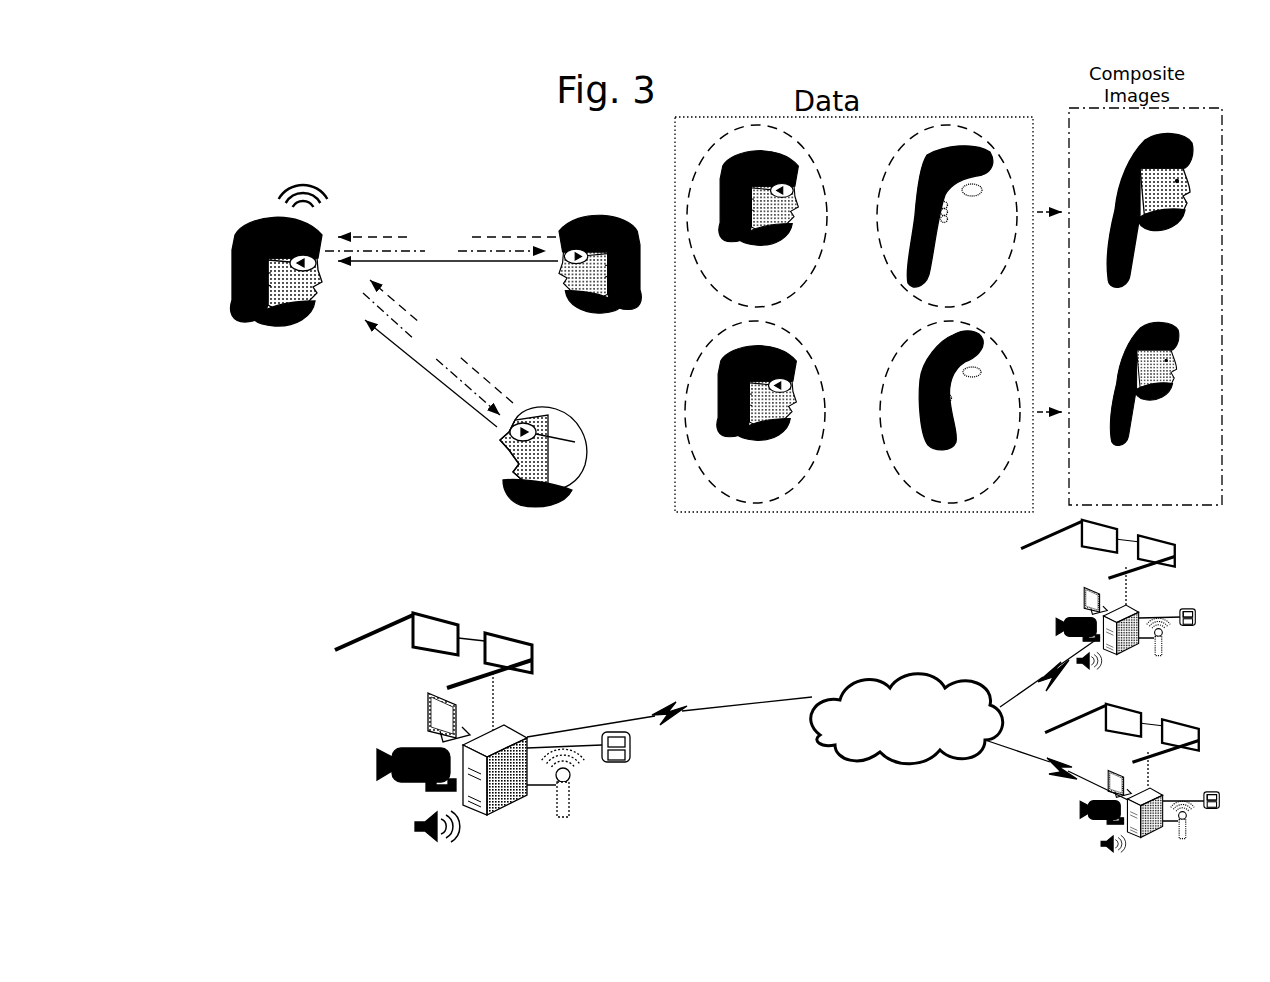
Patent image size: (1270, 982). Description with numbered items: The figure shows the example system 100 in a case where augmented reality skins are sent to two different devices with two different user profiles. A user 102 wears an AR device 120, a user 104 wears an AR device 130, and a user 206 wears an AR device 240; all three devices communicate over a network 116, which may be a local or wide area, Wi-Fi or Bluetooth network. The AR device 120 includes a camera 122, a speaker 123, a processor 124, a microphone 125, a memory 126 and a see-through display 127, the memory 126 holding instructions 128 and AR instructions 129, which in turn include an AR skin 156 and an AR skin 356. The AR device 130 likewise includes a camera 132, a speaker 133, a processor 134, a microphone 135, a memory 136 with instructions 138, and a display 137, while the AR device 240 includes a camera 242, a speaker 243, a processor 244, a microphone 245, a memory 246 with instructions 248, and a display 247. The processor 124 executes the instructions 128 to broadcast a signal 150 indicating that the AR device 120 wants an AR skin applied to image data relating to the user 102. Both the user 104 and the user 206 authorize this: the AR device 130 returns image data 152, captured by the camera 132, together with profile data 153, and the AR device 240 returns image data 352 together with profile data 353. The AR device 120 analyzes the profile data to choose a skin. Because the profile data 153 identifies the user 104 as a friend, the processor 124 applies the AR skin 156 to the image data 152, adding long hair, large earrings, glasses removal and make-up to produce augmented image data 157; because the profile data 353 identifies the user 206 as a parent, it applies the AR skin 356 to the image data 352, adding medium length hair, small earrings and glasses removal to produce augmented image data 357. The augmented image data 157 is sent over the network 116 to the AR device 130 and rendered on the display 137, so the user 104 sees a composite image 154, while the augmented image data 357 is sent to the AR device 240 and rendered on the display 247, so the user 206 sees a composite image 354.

The system 100 is at (389, 108).
The signal 150 is at (303, 182).
The user 102 is at (275, 328).
The user 104 is at (602, 330).
The user 206 is at (530, 508).
The AR device 120 is at (318, 265).
The AR device 130 is at (564, 262).
The AR device 240 is at (506, 433).
The image data 152 is at (757, 216).
The profile data 153 is at (448, 237).
The augmented image data 157 is at (671, 216).
The image data 352 is at (755, 412).
The profile data 353 is at (441, 341).
The augmented image data 357 is at (691, 398).
The composite image 154 is at (1154, 232).
The composite image 354 is at (1161, 435).
The network 116 is at (907, 719).
The camera 122 is at (405, 778).
The speaker 123 is at (422, 833).
The processor 124 is at (505, 805).
The microphone 125 is at (572, 803).
The memory 126 is at (682, 766).
The display 127 is at (427, 707).
The instructions 128 is at (626, 741).
The AR instructions 129 is at (685, 757).
The AR skin 156 is at (616, 755).
The AR skin 356 is at (627, 757).
The camera 132 is at (1068, 634).
The speaker 133 is at (1092, 670).
The processor 134 is at (1124, 648).
The microphone 135 is at (1168, 653).
The memory 136 is at (1190, 627).
The display 137 is at (1083, 597).
The instructions 138 is at (1198, 619).
The camera 242 is at (1097, 817).
The speaker 243 is at (1117, 853).
The processor 244 is at (1150, 831).
The microphone 245 is at (1197, 836).
The memory 246 is at (1217, 809).
The display 247 is at (1118, 773).
The instructions 248 is at (1225, 803).